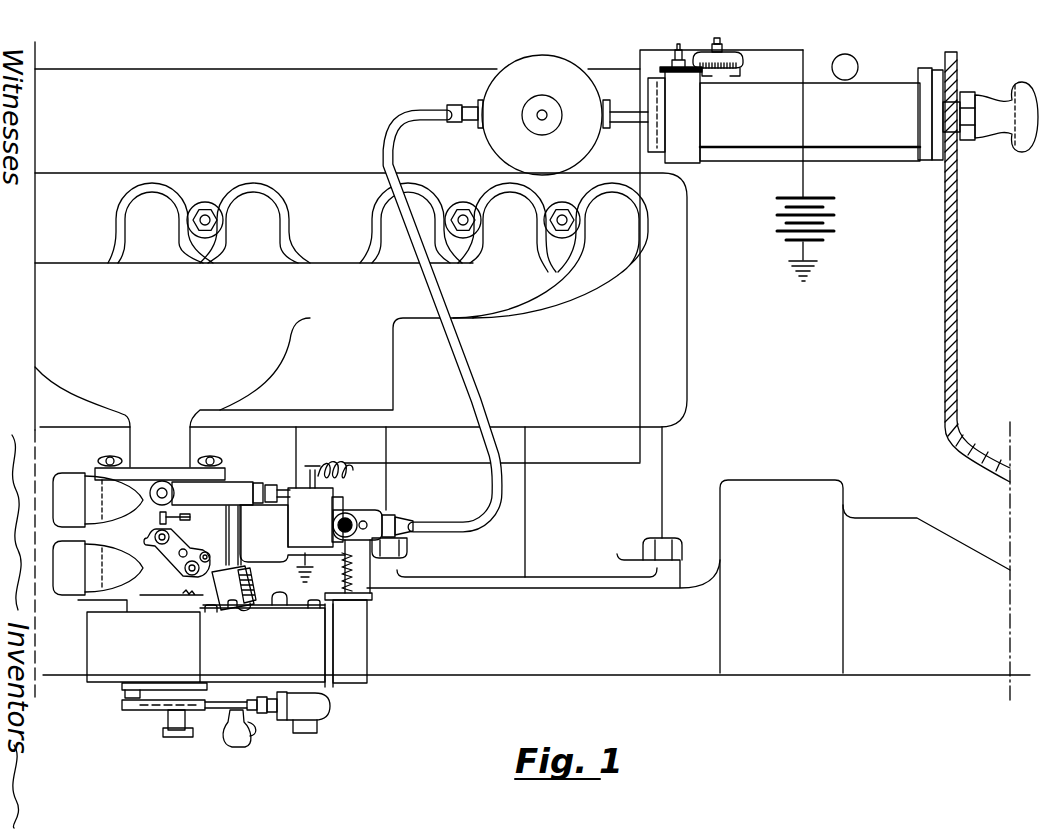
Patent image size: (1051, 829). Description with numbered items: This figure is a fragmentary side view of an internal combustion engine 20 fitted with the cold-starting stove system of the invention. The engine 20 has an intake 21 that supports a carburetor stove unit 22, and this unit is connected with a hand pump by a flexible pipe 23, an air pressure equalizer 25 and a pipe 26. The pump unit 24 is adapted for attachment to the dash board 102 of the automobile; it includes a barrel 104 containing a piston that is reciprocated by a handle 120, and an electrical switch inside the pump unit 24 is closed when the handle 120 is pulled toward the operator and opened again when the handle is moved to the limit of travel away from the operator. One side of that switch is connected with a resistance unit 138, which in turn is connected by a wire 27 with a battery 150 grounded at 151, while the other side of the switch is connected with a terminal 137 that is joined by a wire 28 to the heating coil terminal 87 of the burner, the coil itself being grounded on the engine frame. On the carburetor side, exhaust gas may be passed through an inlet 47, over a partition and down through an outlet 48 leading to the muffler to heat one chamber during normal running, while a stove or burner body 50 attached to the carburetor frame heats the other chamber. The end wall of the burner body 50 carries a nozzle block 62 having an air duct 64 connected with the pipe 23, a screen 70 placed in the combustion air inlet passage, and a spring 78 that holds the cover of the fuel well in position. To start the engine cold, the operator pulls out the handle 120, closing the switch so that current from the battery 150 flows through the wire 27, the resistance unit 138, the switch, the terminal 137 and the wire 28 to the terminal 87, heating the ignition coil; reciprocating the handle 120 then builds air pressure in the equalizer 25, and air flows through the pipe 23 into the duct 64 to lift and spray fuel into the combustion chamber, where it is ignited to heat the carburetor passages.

The internal combustion engine 20 is at (688, 251).
The intake 21 is at (185, 441).
The carburetor stove unit 22 is at (383, 643).
The flexible pipe 23 is at (470, 378).
The pump unit 24 is at (845, 67).
The air pressure equalizer 25 is at (507, 70).
The pipe 26 is at (614, 113).
The wire 27 is at (803, 119).
The wire 28 is at (640, 338).
The inlet 47 is at (66, 472).
The outlet 48 is at (80, 594).
The stove or burner body 50 is at (275, 557).
The nozzle block 62 is at (376, 512).
The air duct 64 is at (390, 515).
The screen 70 is at (347, 512).
The spring 78 is at (343, 575).
The terminal 87 is at (316, 467).
The dash board 102 is at (958, 173).
The barrel 104 is at (884, 135).
The handle 120 is at (1018, 100).
The terminal 137 is at (679, 44).
The resistance unit 138 is at (730, 56).
The battery 150 is at (836, 226).
The ground 151 is at (812, 270).